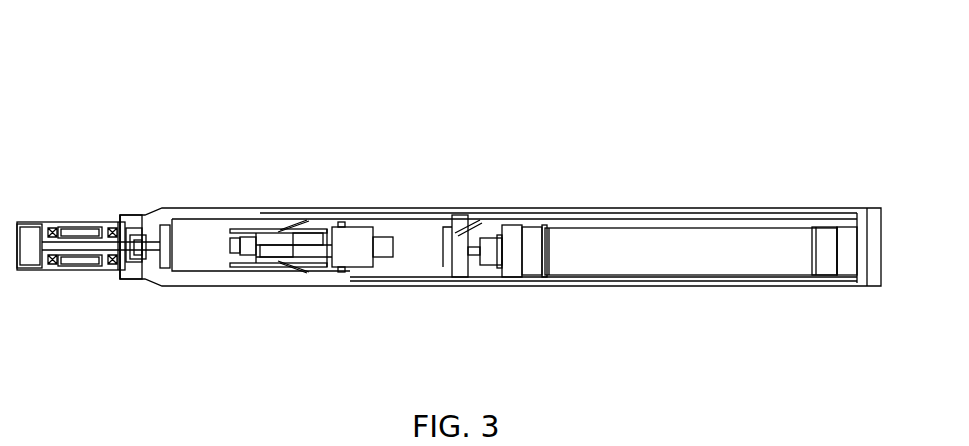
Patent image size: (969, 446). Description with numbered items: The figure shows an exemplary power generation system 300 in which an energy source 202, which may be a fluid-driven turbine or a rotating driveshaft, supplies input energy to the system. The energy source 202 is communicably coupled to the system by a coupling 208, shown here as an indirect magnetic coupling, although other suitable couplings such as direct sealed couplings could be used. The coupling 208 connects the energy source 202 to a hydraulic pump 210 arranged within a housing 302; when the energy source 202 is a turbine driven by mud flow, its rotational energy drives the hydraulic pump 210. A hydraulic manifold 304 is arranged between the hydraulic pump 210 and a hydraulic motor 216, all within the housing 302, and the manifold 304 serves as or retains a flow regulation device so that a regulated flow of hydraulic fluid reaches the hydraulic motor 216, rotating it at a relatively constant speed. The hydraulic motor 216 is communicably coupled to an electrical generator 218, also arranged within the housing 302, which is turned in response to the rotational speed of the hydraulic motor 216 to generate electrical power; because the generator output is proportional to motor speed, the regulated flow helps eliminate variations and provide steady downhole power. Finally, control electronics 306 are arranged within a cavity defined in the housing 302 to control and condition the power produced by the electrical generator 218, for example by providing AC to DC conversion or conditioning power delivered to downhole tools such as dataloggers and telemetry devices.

The power generation system 300 is at (163, 112).
The energy source 202 is at (119, 198).
The coupling 208 is at (79, 265).
The hydraulic pump 210 is at (226, 268).
The hydraulic manifold 304 is at (287, 220).
The hydraulic motor 216 is at (349, 238).
The electrical generator 218 is at (420, 258).
The housing 302 is at (538, 283).
The control electronics 306 is at (672, 260).